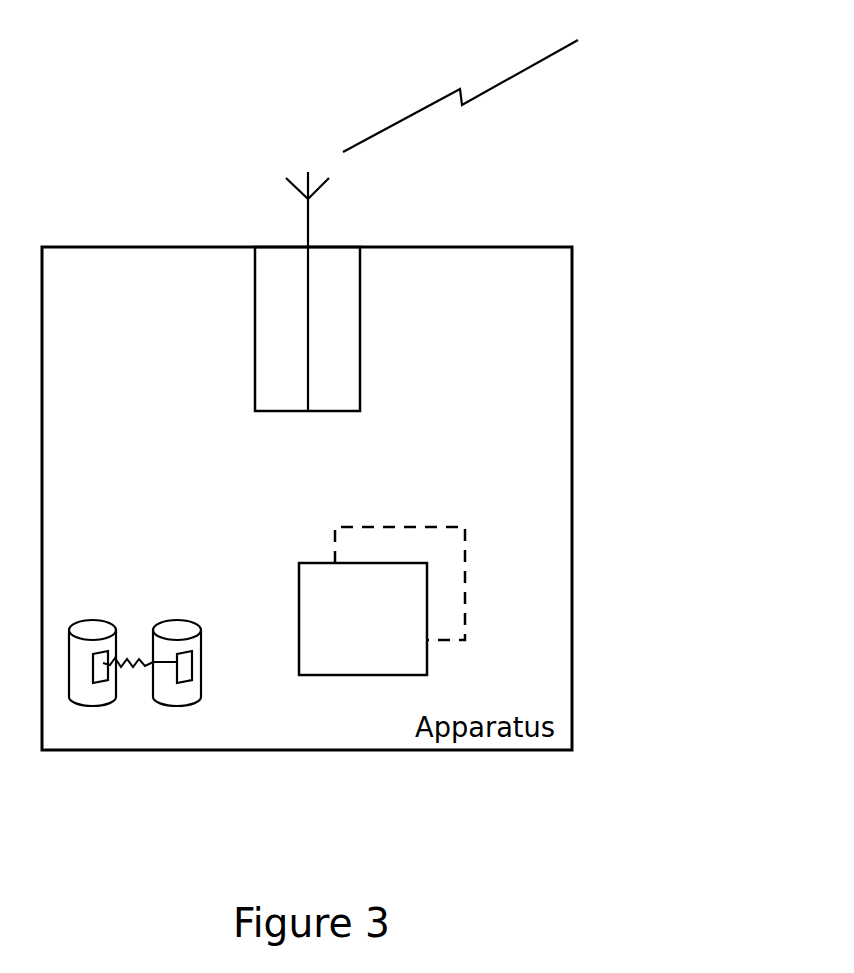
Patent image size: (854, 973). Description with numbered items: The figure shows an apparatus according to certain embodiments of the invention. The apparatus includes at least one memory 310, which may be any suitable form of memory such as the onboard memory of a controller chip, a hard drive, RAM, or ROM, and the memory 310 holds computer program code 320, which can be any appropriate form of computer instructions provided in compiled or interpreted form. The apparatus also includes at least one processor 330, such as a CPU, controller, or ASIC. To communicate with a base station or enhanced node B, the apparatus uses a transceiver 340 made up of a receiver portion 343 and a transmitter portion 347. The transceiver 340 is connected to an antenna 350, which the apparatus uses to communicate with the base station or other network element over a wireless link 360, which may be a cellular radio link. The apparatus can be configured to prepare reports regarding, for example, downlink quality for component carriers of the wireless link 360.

The memory 310 is at (102, 693).
The computer program code 320 is at (133, 657).
The processor 330 is at (390, 634).
The transceiver 340 is at (308, 412).
The receiver portion 343 is at (275, 282).
The transmitter portion 347 is at (347, 293).
The antenna 350 is at (331, 291).
The wireless link 360 is at (460, 96).